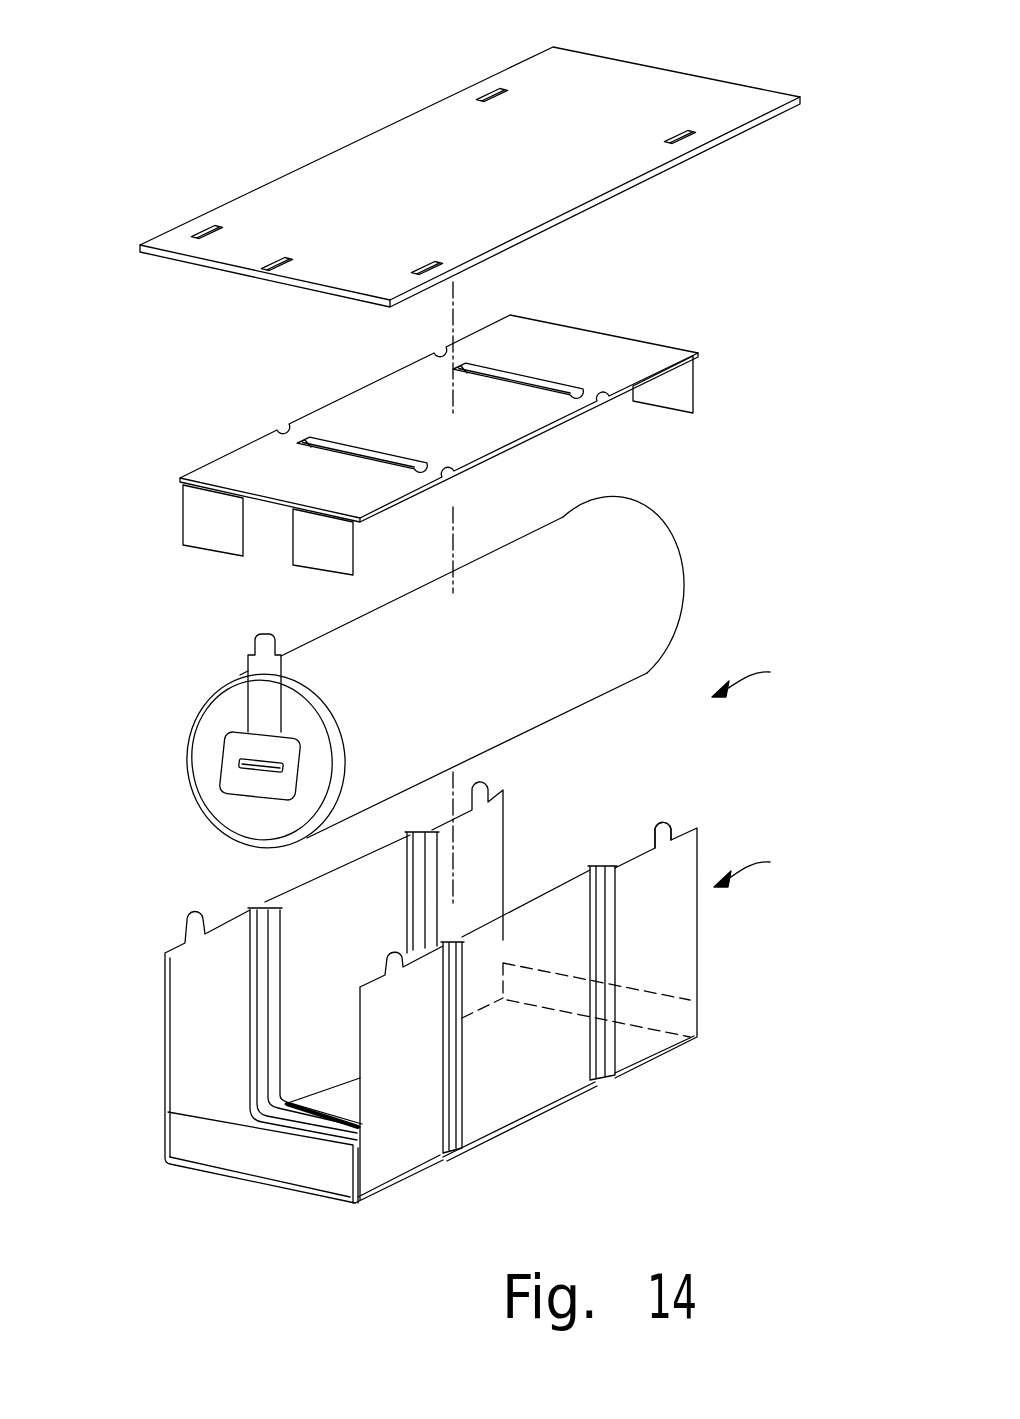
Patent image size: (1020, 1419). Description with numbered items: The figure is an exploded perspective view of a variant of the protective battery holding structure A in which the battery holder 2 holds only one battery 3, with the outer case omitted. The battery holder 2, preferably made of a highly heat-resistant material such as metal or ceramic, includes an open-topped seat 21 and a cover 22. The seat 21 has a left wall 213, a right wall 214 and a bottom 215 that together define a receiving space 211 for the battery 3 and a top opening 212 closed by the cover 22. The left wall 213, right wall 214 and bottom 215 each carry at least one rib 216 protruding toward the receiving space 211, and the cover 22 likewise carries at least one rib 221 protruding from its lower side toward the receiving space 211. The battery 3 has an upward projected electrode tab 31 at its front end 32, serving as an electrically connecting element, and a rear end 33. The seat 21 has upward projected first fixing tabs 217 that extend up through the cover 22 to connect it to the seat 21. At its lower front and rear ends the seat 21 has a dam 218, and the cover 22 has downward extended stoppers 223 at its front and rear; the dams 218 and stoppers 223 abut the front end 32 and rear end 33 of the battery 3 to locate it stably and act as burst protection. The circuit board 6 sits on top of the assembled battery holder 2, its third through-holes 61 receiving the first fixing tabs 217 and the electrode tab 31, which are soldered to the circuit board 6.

The battery holder 2 is at (421, 1020).
The battery 3 is at (416, 676).
The circuit board 6 is at (660, 78).
The seat 21 is at (703, 921).
The cover 22 is at (640, 352).
The electrode tab 31 is at (256, 658).
The front end 32 is at (208, 722).
The rear end 33 is at (637, 530).
The third through-holes 61 is at (692, 128).
The receiving space 211 is at (305, 1025).
The top opening 212 is at (305, 920).
The left wall 213 is at (208, 978).
The right wall 214 is at (505, 1100).
The bottom 215 is at (275, 1167).
The rib 216 is at (590, 866).
The first fixing tabs 217 is at (665, 820).
The dam 218 is at (690, 1000).
The rib 221 is at (518, 379).
The stopper 223 is at (680, 389).
The protective battery holding structure A is at (752, 675).